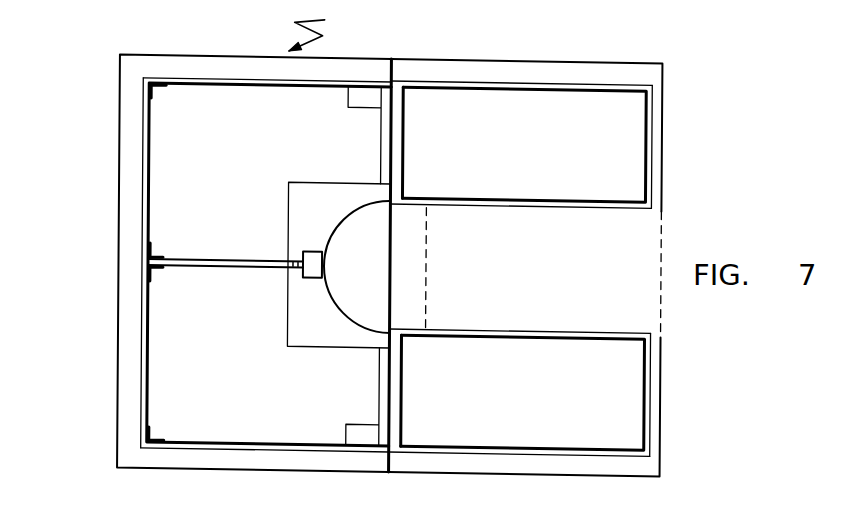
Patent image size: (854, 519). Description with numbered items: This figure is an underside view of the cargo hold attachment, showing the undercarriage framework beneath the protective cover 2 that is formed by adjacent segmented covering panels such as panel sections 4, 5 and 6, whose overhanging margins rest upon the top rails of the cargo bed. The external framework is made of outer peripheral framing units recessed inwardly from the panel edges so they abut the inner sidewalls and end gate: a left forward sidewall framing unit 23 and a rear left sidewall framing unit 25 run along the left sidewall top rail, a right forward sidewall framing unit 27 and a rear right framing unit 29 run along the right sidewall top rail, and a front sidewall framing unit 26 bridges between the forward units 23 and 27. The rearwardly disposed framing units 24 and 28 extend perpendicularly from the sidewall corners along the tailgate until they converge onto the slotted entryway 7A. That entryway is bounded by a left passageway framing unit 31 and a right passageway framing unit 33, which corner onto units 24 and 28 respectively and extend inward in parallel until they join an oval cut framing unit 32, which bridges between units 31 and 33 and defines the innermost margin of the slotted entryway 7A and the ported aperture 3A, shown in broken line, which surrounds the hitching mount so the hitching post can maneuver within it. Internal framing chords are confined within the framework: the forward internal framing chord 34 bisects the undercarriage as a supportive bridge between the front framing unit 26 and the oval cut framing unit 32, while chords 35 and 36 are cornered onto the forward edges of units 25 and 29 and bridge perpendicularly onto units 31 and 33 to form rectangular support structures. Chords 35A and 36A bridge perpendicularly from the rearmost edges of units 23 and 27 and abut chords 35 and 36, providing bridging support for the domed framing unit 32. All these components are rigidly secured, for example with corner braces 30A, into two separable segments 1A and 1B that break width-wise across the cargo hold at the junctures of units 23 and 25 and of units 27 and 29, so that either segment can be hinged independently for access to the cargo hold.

The forward undercarriage segment 1A is at (118, 83).
The rearward undercarriage segment 1B is at (601, 59).
The protective cover 2 is at (320, 31).
The covering panel section 4 is at (118, 240).
The covering panel section 5 is at (537, 153).
The covering panel section 6 is at (539, 403).
The slotted aperture 7A is at (500, 265).
The ported aperture 3A is at (388, 259).
The left forward sidewall framing unit 23 is at (232, 81).
The rear left external framing unit 24 is at (650, 141).
The rear left sidewall framing unit 25 is at (510, 81).
The front sidewall framing unit 26 is at (141, 141).
The right forward sidewall framing unit 27 is at (262, 452).
The rear right external framing unit 28 is at (650, 402).
The rear right framing unit 29 is at (572, 453).
The corner braces 30A is at (153, 94).
The left passageway framing unit 31 is at (525, 205).
The oval cut framing unit 32 is at (335, 301).
The right passageway framing unit 33 is at (538, 328).
The forward internal framing chord 34 is at (230, 271).
The internal framing chord 35 is at (402, 128).
The internal framing chord 35A is at (380, 143).
The internal framing chord 36 is at (402, 372).
The internal framing chord 36A is at (380, 382).